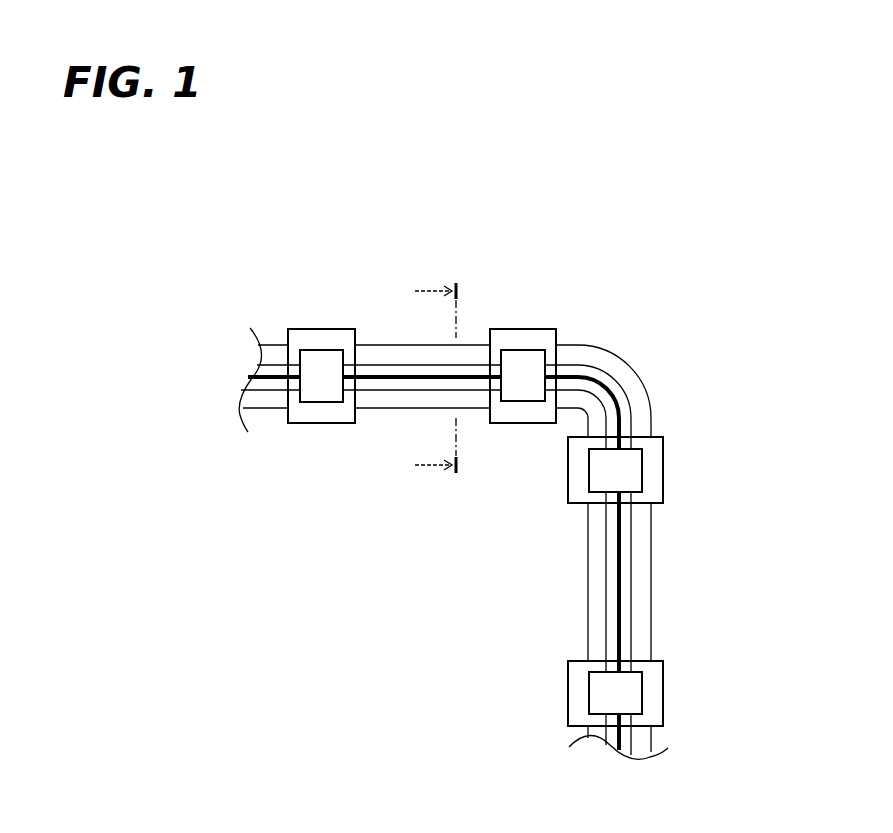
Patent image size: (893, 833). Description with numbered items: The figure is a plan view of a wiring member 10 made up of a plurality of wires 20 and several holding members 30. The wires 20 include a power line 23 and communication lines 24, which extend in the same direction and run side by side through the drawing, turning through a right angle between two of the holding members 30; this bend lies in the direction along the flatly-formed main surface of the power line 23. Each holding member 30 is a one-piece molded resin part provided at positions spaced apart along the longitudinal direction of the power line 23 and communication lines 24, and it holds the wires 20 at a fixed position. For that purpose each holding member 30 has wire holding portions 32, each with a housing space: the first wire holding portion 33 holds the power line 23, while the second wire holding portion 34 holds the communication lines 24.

The wiring member 10 is at (219, 208).
The wires 20 is at (687, 330).
The power line 23 is at (623, 355).
The communication lines 24 is at (610, 405).
The holding member 30 is at (385, 268).
The wire holding portions 32 is at (312, 347).
The first wire holding portion 33 is at (300, 329).
The second wire holding portion 34 is at (333, 349).